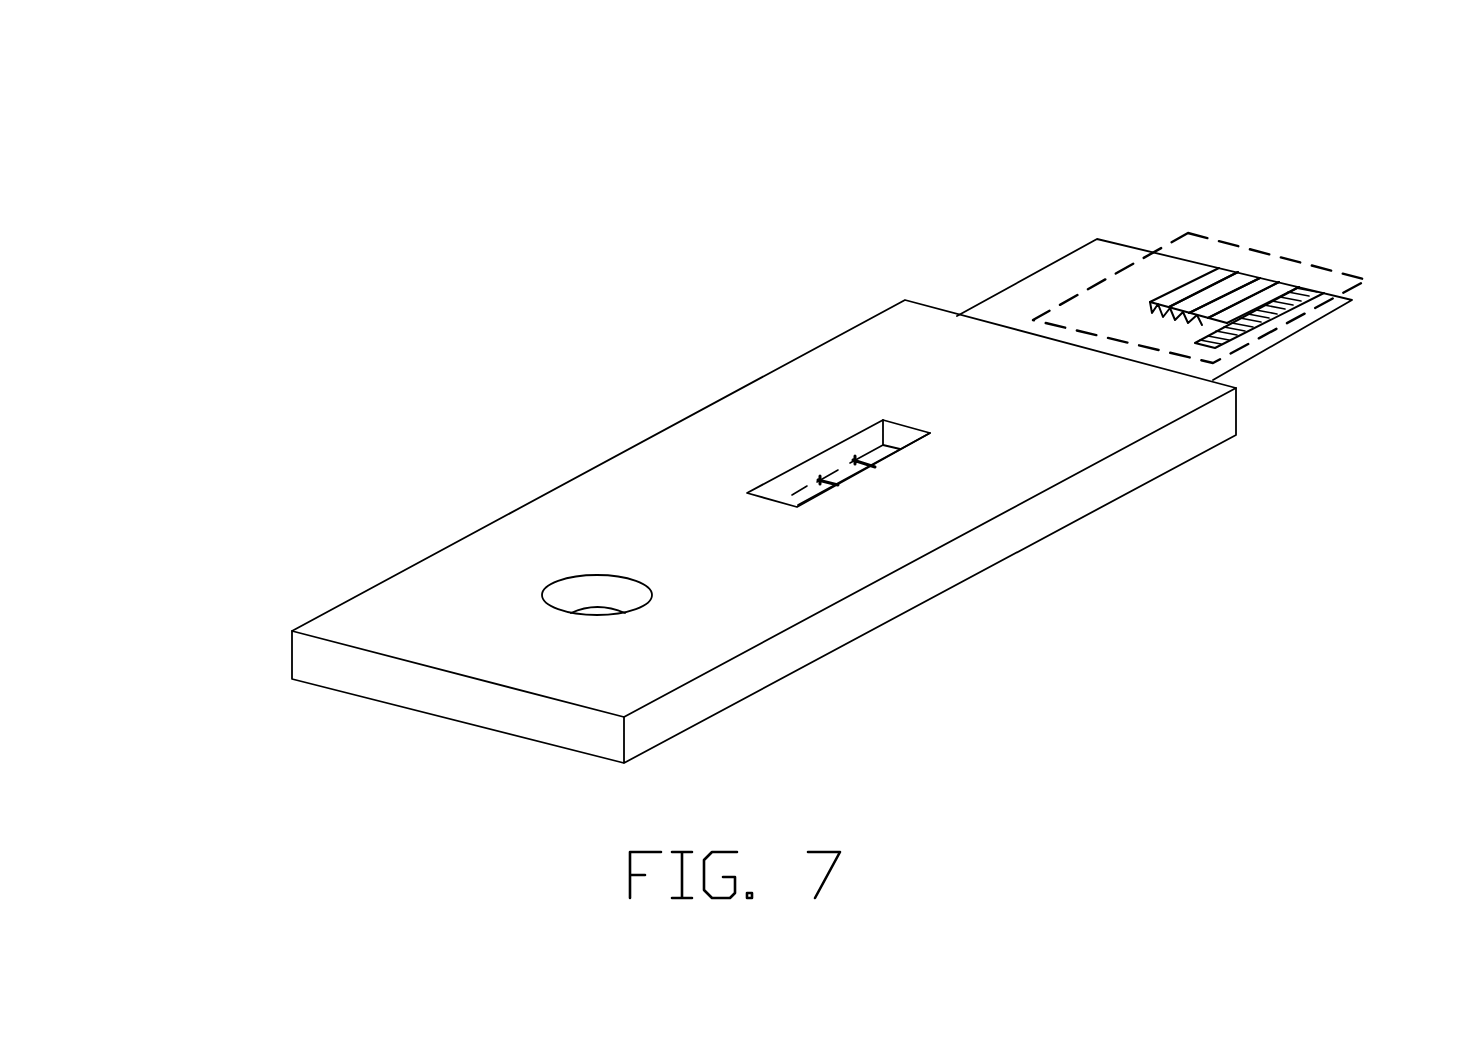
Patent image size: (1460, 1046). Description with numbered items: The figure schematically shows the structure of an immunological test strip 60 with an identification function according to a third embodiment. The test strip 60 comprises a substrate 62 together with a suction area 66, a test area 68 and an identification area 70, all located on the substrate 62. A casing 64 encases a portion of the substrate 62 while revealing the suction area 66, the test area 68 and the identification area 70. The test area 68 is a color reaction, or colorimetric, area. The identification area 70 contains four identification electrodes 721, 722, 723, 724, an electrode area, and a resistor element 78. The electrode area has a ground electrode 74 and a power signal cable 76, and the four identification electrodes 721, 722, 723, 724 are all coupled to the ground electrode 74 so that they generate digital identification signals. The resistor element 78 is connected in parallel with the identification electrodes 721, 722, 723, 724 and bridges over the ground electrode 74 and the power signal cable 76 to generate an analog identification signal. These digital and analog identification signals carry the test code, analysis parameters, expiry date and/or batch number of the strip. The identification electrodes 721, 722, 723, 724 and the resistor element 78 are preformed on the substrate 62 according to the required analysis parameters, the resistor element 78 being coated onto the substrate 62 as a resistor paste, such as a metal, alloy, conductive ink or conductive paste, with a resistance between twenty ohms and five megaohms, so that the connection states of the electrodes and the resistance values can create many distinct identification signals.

The immunological test strip 60 is at (278, 240).
The substrate 62 is at (965, 312).
The casing 64 is at (980, 547).
The suction area 66 is at (573, 612).
The test area 68 is at (820, 453).
The identification area 70 is at (1050, 308).
The ground electrode 74 is at (1313, 285).
The power signal cable 76 is at (1165, 300).
The resistor element 78 is at (1150, 305).
The identification electrode 721 is at (1157, 292).
The identification electrode 722 is at (1187, 292).
The identification electrode 723 is at (1240, 292).
The identification electrode 724 is at (1270, 292).